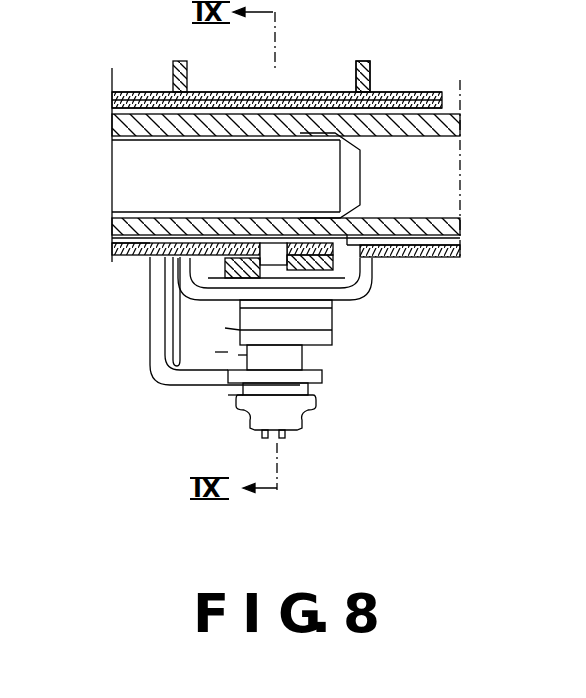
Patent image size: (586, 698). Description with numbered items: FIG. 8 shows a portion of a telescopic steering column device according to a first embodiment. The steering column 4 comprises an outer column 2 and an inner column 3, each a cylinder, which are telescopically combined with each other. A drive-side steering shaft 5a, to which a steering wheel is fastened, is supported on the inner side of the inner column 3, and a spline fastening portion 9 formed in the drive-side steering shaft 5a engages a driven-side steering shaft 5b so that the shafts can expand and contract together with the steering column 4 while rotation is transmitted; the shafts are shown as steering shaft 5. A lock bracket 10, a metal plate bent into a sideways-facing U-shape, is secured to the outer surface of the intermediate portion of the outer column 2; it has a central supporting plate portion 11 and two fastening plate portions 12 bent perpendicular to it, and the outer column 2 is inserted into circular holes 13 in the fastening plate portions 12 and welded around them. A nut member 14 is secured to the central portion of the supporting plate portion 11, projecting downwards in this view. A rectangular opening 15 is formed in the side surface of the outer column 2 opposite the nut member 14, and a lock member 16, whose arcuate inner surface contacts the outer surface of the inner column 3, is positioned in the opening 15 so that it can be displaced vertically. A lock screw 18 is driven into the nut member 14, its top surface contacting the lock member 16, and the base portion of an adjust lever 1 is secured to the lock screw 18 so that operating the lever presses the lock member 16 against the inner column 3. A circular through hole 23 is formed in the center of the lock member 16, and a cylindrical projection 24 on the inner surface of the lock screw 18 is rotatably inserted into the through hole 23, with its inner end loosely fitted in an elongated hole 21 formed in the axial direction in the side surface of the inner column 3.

The adjust lever 1 is at (228, 395).
The outer column 2 is at (425, 90).
The inner column 3 is at (462, 243).
The steering column 4 is at (303, 92).
The housing tube 5 is at (112, 157).
The drive-side steering shaft 5a is at (447, 128).
The driven-side steering shaft 5b is at (150, 182).
The spline fastening portion 9 is at (140, 250).
The lock bracket 10 is at (332, 318).
The supporting plate portion 11 is at (342, 306).
The fastening plate portions 12 is at (179, 63).
The circular holes 13 is at (372, 91).
The nut member 14 is at (215, 352).
The rectangular opening 15 is at (227, 328).
The lock member 16 is at (238, 355).
The lock screw 18 is at (305, 352).
The elongated hole 21 is at (357, 228).
The circular through hole 23 is at (305, 399).
The cylindrical projection 24 is at (270, 262).